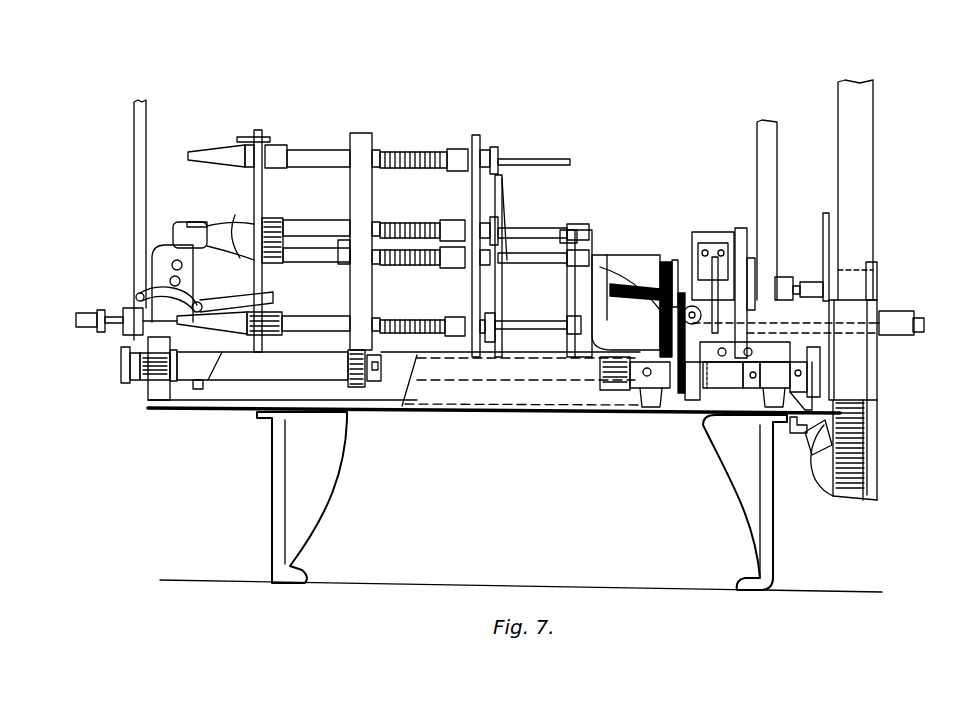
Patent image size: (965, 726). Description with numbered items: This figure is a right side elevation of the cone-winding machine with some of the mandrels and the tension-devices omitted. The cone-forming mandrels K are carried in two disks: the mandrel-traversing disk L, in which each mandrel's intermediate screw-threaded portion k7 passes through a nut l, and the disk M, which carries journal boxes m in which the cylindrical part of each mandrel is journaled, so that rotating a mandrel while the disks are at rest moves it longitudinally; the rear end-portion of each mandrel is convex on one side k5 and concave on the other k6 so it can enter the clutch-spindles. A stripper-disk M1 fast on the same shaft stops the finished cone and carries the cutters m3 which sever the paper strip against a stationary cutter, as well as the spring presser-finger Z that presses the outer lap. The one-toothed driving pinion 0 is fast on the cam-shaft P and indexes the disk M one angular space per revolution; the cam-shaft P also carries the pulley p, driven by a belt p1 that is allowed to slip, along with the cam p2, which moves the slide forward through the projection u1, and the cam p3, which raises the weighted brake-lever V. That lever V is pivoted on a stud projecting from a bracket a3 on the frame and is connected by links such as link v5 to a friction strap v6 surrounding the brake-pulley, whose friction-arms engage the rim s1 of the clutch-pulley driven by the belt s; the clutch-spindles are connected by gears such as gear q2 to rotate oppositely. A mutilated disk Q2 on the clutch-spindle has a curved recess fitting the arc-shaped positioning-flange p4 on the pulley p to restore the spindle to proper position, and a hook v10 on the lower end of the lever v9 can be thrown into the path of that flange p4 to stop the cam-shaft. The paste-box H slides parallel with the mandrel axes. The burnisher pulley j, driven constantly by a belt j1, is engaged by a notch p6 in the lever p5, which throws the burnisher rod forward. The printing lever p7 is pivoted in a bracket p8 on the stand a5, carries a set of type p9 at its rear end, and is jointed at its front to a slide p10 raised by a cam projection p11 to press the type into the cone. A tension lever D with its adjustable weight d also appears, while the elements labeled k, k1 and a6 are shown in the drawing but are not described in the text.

The paste-box H is at (497, 414).
The belt j1 is at (147, 144).
The pulley j is at (123, 334).
The belt p1 is at (869, 246).
The pulley p is at (868, 379).
The cam p2 is at (826, 428).
The cam p3 is at (693, 402).
The positioning-flange p4 is at (878, 298).
The lever p5 is at (196, 392).
The notch p6 is at (131, 367).
The lever p7 is at (212, 300).
The bracket p8 is at (170, 274).
The type p9 is at (274, 303).
The slide p10 is at (200, 221).
The cam projection p11 is at (122, 356).
The link v5 is at (757, 293).
The friction strap v6 is at (720, 240).
The lever v9 is at (864, 446).
The hook v10 is at (835, 498).
The belt s is at (770, 264).
The rim s1 is at (672, 260).
The mutilated disk Q2 is at (823, 250).
The gear q2 is at (642, 298).
The brake-lever V is at (659, 310).
The projection u1 is at (730, 364).
The bracket a3 is at (607, 385).
The stand a5 is at (133, 298).
The carriage body a6 is at (580, 312).
The tension lever D is at (910, 335).
The adjustable weight d is at (925, 323).
The disk M is at (373, 142).
The stripper-disk M1 is at (243, 173).
The mandrel-traversing disk L is at (481, 142).
The cutter m3 is at (246, 137).
The journal box m is at (380, 223).
The mandrel K is at (322, 153).
The tip k is at (201, 152).
The rod with nut k1 is at (283, 224).
The convex side k5 is at (547, 156).
The concave side k6 is at (548, 167).
The screw-threaded portion k7 is at (410, 222).
The nut l is at (456, 222).
The presser-finger Z is at (264, 222).
The one-toothed driving pinion 0 is at (358, 392).
The cam-shaft P is at (399, 376).